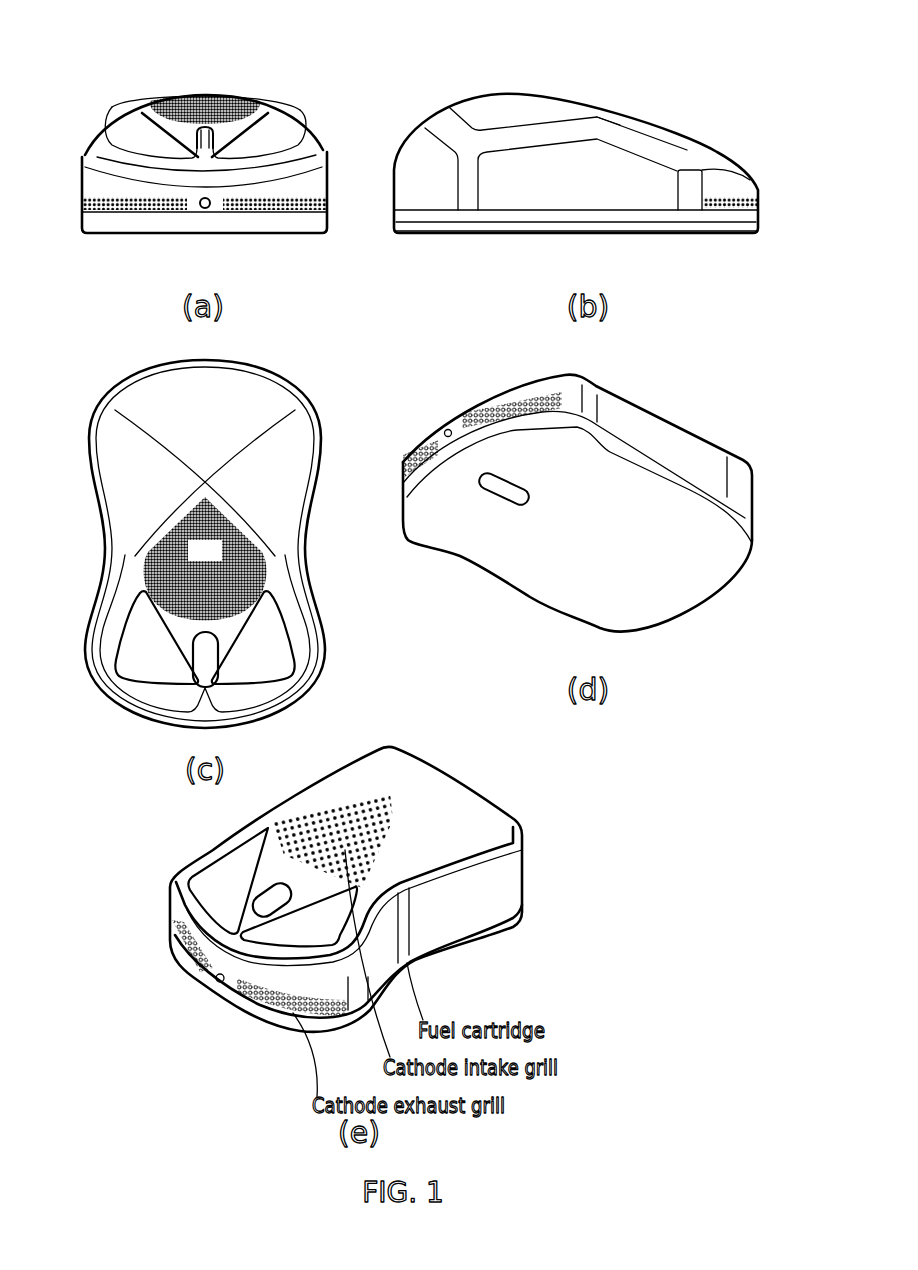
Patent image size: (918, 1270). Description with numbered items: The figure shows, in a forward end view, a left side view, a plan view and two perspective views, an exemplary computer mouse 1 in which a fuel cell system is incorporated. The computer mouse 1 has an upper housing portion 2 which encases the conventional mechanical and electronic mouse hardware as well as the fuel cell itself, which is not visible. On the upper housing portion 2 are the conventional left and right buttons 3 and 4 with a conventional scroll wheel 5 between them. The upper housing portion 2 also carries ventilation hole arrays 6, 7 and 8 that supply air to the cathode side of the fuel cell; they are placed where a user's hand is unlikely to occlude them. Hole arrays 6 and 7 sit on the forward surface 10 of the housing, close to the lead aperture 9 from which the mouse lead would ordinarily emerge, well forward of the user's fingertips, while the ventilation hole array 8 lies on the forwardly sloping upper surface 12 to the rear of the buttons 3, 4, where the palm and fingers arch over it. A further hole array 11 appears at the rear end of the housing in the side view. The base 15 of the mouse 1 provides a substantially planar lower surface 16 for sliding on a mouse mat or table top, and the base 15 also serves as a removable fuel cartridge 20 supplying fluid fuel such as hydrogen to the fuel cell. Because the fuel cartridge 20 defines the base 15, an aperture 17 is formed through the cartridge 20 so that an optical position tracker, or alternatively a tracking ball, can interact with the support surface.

The computer mouse 1 is at (140, 66).
The upper housing portion 2 is at (720, 152).
The left and right buttons 3 is at (272, 125).
The left and right buttons 4 is at (138, 130).
The scroll wheel 5 is at (196, 126).
The ventilation hole array 6 is at (328, 207).
The ventilation hole array 7 is at (112, 208).
The ventilation hole array 8 is at (262, 572).
The lead aperture 9 is at (203, 208).
The forward surface 10 is at (217, 183).
The end grill 11 is at (760, 188).
The forwardly sloping upper surface 12 is at (638, 118).
The base 15 is at (658, 222).
The lower surface 16 is at (577, 478).
The aperture 17 is at (517, 493).
The fuel cartridge 20 is at (743, 222).